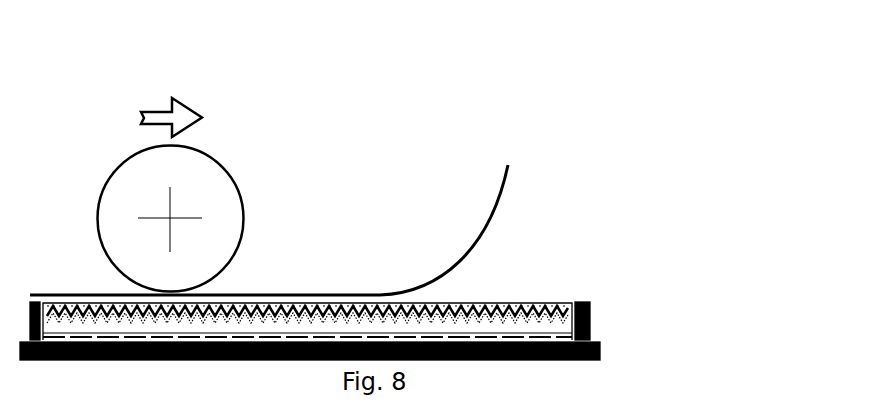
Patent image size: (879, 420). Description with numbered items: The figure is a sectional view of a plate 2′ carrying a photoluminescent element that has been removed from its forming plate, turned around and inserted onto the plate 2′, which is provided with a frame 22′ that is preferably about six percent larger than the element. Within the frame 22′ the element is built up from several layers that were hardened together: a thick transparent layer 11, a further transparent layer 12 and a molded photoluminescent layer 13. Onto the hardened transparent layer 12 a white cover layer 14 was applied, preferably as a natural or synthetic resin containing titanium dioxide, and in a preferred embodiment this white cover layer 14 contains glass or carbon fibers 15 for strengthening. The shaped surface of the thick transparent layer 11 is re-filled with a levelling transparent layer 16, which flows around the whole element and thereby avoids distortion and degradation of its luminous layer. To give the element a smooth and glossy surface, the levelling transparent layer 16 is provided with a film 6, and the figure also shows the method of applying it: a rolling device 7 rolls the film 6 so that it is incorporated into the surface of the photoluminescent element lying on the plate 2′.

The film 6 is at (370, 166).
The rolling device 7 is at (288, 191).
The glass or carbon fibers 15 is at (382, 214).
The levelling transparent layer 16 is at (384, 223).
The thick transparent layer 11 is at (385, 240).
The photoluminescent layer 13 is at (385, 264).
The transparent layer 12 is at (383, 284).
The frame 22′ is at (384, 303).
The white cover layer 14 is at (376, 320).
The plate 2′ is at (583, 351).